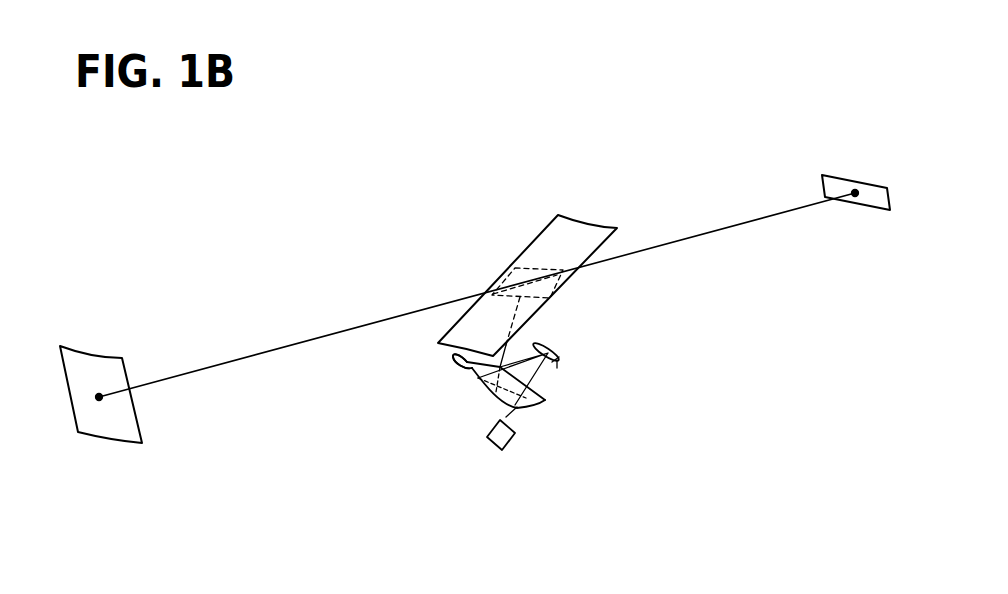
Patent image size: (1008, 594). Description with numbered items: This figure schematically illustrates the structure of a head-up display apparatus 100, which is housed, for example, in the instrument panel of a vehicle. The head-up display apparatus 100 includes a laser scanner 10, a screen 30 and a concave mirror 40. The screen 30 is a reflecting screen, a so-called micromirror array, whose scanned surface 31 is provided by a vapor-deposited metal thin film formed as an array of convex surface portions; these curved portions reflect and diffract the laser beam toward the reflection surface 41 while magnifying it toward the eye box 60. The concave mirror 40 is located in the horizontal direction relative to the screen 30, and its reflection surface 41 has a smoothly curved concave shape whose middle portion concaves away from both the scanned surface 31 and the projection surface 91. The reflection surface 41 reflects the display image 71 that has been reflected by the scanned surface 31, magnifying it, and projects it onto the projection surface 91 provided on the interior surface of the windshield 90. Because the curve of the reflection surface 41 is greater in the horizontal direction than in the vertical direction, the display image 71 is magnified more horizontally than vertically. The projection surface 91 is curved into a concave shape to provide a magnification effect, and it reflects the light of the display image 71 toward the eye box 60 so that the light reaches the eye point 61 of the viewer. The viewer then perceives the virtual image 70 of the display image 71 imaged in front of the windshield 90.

The laser scanner 10 is at (512, 447).
The screen 30 is at (560, 348).
The scanned surface 31 is at (557, 375).
The concave mirror 40 is at (545, 402).
The reflection surface 41 is at (453, 372).
The eye box 60 is at (833, 175).
The eye point 61 is at (855, 192).
The virtual image 70 is at (83, 352).
The display image 71 is at (556, 368).
The windshield 90 is at (527, 248).
The projection surface 91 is at (552, 297).
The head-up display apparatus 100 is at (467, 402).